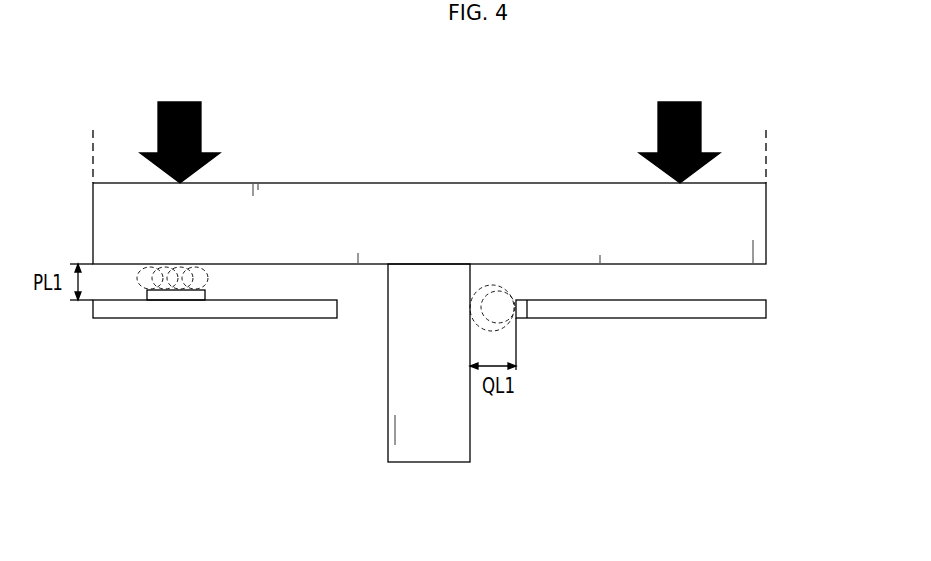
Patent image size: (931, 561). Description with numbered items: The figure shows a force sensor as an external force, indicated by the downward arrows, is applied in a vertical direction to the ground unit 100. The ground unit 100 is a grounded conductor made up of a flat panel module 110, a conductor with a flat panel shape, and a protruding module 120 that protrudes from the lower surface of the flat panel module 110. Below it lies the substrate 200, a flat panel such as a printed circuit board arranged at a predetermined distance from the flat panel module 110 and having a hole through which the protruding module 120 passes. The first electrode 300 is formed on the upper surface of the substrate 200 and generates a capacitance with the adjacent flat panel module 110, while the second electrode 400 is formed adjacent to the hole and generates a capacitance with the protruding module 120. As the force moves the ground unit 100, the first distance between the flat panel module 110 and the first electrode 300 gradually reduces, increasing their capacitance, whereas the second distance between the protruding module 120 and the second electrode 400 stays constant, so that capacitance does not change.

The ground unit 100 is at (523, 83).
The flat panel module 110 is at (418, 200).
The protruding module 120 is at (455, 302).
The substrate 200 is at (758, 307).
The first electrode 300 is at (170, 297).
The second electrode 400 is at (520, 296).